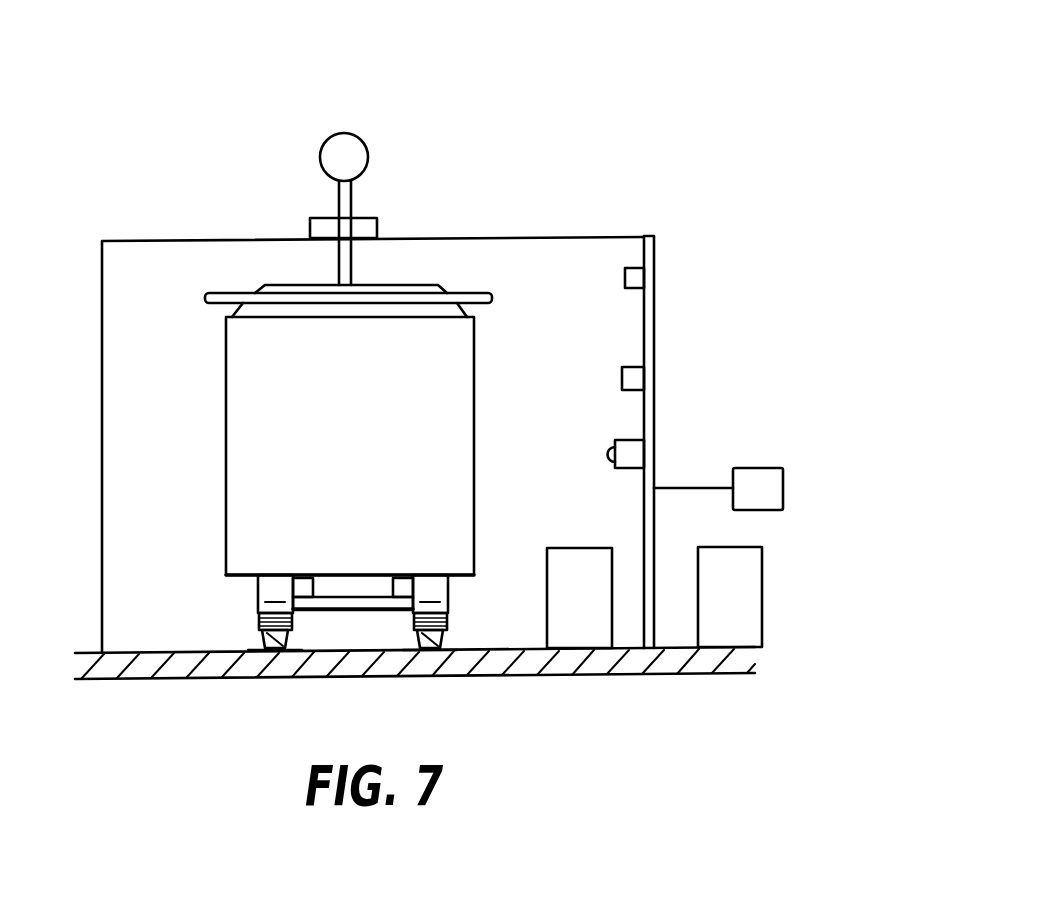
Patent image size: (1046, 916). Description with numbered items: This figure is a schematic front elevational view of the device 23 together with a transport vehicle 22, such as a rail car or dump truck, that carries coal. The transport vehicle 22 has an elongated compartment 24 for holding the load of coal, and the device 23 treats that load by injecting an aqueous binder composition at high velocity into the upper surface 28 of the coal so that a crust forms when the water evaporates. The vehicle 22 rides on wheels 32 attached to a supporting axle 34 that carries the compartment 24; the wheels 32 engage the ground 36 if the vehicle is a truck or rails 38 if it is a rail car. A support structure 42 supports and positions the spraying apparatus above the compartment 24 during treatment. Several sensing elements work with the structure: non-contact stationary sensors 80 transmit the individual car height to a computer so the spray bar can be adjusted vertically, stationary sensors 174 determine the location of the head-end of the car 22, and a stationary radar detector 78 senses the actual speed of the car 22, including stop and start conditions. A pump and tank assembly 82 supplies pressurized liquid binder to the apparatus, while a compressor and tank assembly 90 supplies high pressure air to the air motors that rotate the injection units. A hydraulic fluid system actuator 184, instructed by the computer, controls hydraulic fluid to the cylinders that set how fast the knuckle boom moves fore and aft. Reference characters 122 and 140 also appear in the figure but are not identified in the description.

The transport vehicle 22 is at (227, 430).
The device 23 is at (645, 84).
The elongated compartment 24 is at (369, 458).
The upper surface 28 is at (408, 285).
The wheels 32 is at (440, 590).
The supporting axle 34 is at (352, 611).
The ground 36 is at (545, 668).
The rails 38 is at (445, 651).
The support structure 42 is at (654, 326).
The stationary radar detector 78 is at (617, 440).
The non-contact stationary sensors 80 is at (625, 277).
The pump and tank assembly 82 is at (738, 599).
The compressor and tank assembly 90 is at (758, 483).
The handle block 122 is at (335, 257).
The knob 140 is at (355, 134).
The stationary sensors 174 is at (622, 375).
The hydraulic fluid system actuator 184 is at (563, 577).